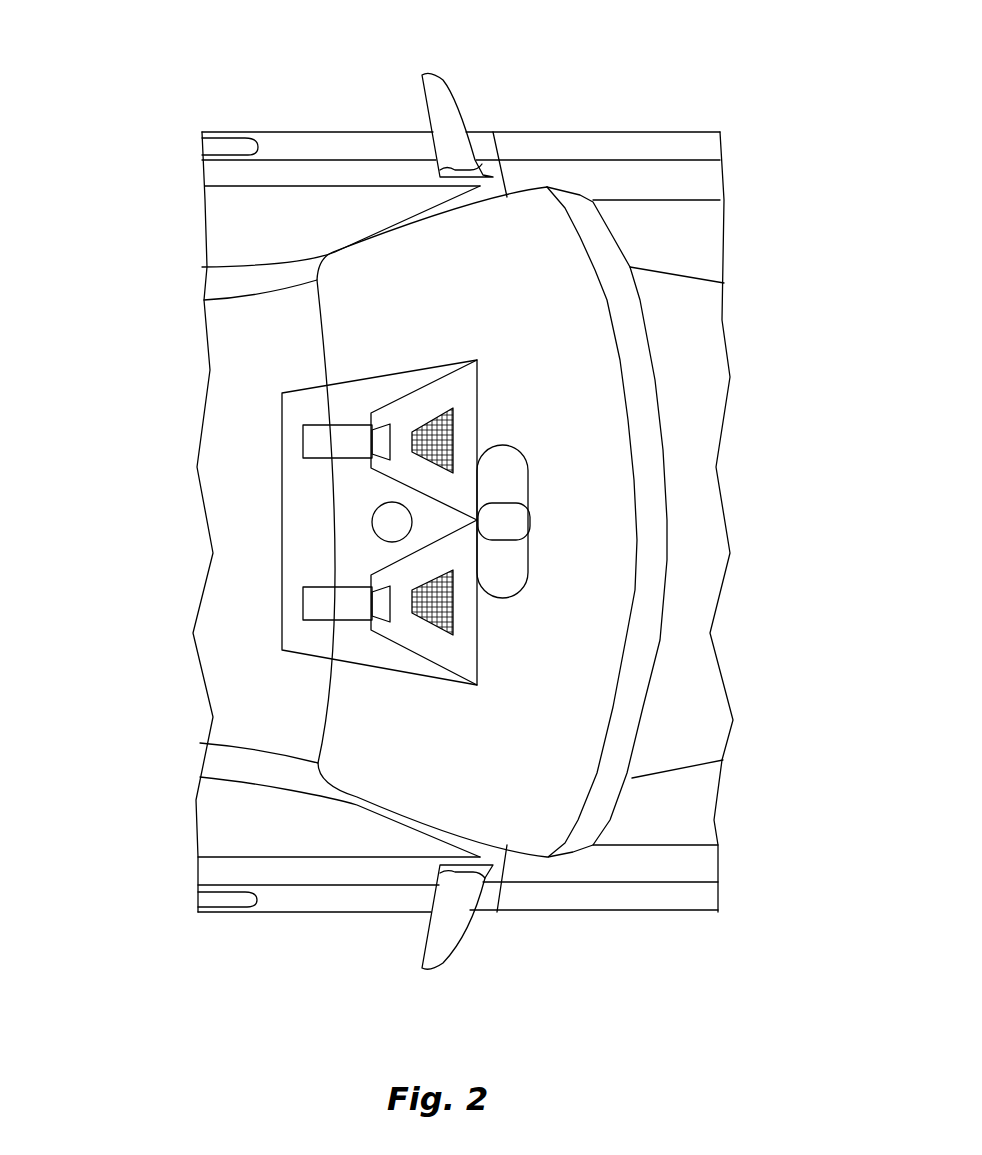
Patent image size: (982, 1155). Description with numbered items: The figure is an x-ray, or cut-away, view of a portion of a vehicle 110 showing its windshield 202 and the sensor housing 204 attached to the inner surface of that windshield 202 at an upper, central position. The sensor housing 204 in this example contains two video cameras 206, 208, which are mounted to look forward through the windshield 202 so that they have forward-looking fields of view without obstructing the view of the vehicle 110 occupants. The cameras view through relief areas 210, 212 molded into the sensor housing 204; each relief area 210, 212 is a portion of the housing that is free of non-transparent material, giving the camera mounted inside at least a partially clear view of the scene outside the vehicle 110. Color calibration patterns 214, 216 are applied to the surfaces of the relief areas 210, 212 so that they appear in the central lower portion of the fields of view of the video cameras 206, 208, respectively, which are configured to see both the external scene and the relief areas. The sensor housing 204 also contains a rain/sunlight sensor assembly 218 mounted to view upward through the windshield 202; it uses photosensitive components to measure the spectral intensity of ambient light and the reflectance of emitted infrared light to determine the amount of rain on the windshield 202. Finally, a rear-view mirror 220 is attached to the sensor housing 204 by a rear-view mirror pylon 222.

The vehicle 110 is at (587, 133).
The windshield 202 is at (513, 333).
The sensor housing 204 is at (282, 540).
The video camera 206 is at (302, 440).
The video camera 208 is at (302, 603).
The relief area 210 is at (372, 412).
The relief area 212 is at (437, 623).
The color calibration pattern 214 is at (430, 425).
The color calibration pattern 216 is at (383, 635).
The rain/sunlight sensor assembly 218 is at (372, 513).
The rear-view mirror 220 is at (497, 447).
The rear-view mirror pylon 222 is at (528, 518).